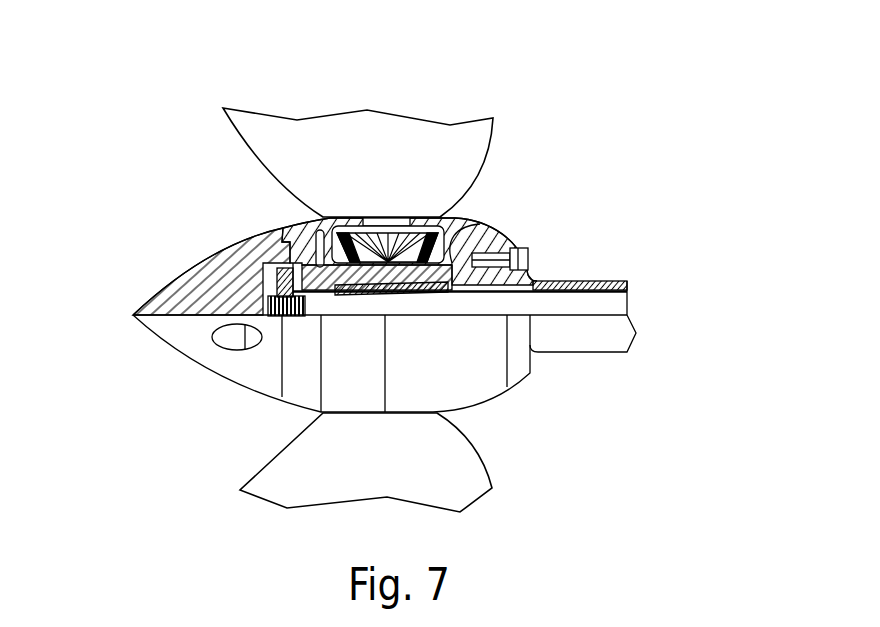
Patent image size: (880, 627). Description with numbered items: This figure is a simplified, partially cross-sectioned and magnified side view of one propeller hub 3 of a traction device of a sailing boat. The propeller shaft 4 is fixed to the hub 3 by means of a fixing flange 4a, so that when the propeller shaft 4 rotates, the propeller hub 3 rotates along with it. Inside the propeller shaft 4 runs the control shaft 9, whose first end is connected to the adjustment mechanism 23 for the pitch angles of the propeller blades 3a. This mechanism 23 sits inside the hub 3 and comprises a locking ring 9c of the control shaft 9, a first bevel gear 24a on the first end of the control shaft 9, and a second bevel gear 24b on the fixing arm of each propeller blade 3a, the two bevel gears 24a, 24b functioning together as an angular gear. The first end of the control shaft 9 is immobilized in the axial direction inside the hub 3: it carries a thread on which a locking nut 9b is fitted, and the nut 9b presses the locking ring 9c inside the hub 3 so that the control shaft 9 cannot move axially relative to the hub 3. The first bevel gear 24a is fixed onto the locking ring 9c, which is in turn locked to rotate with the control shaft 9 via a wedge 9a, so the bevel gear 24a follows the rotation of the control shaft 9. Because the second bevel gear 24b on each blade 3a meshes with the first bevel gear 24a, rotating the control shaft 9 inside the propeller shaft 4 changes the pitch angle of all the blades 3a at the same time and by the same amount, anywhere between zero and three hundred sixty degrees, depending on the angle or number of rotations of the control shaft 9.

The propeller hub 3 is at (130, 209).
The propeller blade 3a is at (262, 120).
The propeller shaft 4 is at (617, 281).
The fixing flange 4a is at (517, 378).
The control shaft 9 is at (618, 304).
The wedge 9a is at (400, 293).
The locking nut 9b is at (263, 282).
The locking ring 9c is at (293, 232).
The adjustment mechanism 23 is at (480, 205).
The first bevel gear 24a is at (480, 224).
The second bevel gear 24b is at (390, 226).